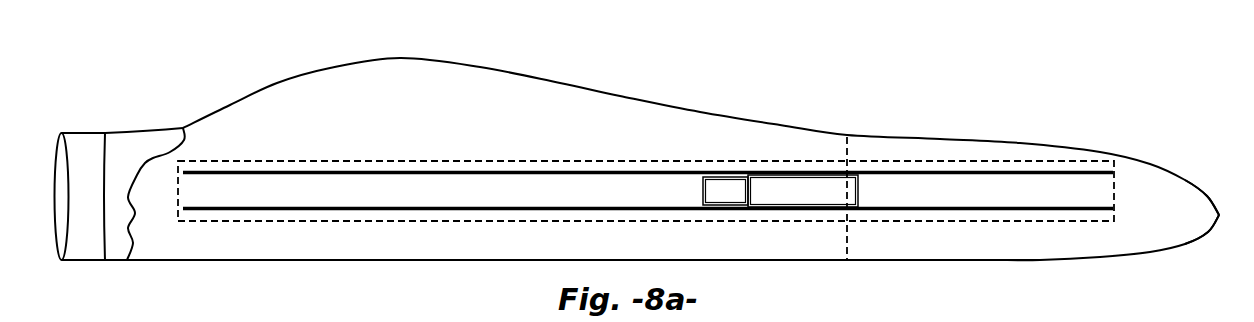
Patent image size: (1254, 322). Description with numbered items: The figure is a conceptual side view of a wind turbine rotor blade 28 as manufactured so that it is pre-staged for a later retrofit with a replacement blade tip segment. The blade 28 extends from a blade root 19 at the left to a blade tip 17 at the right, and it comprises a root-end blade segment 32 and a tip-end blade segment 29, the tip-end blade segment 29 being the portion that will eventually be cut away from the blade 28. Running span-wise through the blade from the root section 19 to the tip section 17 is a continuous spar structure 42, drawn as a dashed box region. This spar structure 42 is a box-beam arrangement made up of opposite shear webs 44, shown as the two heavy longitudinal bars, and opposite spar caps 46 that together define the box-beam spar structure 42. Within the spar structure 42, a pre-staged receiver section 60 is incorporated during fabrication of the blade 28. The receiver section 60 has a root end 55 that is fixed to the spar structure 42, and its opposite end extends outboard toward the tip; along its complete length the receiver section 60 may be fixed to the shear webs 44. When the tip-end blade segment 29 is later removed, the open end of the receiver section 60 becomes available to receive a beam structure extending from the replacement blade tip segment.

The rotor blade 28 is at (182, 80).
The root-end blade segment 32 is at (277, 82).
The blade root 19 is at (130, 147).
The spar caps 46 is at (312, 161).
The shear webs 44 is at (397, 171).
The spar structure 42 is at (646, 176).
The receiver section 60 is at (788, 186).
The root end of receiver section 55 is at (730, 207).
The blade tip 17 is at (1184, 195).
The tip-end blade segment 29 is at (1044, 260).